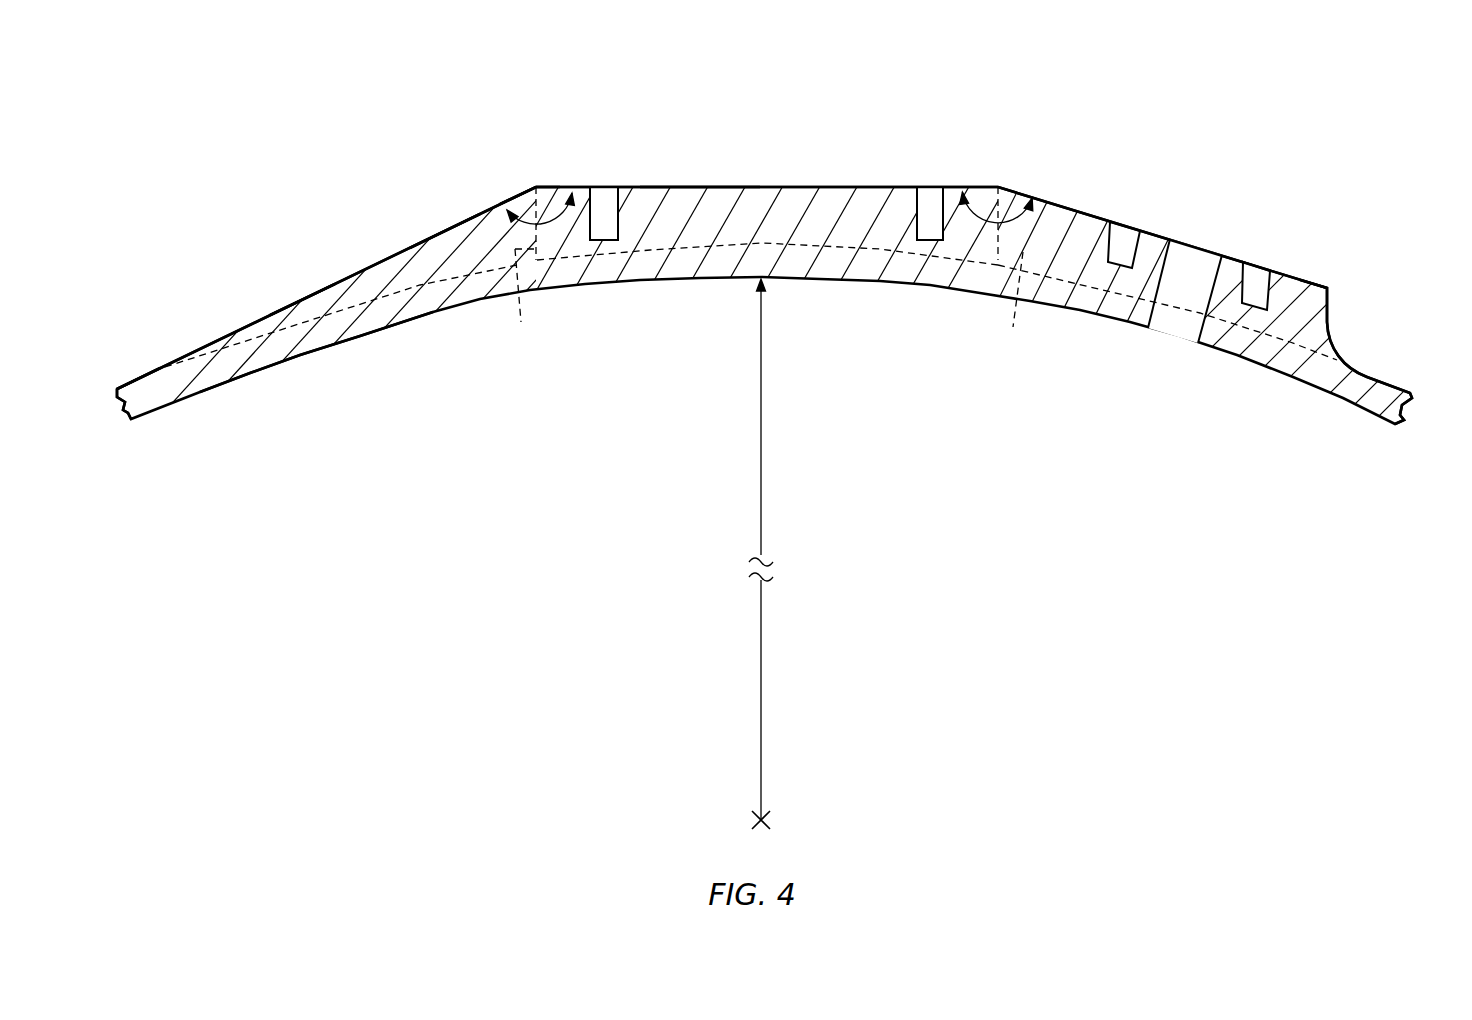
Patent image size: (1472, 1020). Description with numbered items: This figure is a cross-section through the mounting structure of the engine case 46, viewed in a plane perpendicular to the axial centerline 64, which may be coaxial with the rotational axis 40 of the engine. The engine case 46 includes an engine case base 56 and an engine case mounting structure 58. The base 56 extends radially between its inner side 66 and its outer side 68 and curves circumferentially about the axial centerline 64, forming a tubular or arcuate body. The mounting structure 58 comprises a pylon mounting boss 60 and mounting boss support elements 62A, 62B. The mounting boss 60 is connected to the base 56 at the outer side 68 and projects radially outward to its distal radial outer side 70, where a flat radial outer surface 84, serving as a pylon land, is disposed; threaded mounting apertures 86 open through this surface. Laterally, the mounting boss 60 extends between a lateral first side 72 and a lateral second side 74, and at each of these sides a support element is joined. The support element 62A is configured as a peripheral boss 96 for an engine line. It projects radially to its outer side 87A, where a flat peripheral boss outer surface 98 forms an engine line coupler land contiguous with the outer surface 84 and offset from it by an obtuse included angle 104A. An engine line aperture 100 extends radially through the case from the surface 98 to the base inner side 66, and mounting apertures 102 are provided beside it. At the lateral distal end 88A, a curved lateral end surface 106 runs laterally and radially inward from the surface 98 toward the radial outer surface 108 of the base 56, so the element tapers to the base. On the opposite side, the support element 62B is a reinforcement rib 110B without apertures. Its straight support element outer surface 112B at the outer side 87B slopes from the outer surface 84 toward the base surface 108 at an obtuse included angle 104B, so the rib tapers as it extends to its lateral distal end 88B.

The rotational axis 40 is at (827, 554).
The engine case 46 is at (207, 114).
The engine case base 56 is at (291, 370).
The engine case mounting structure 58 is at (540, 150).
The pylon mounting boss 60 is at (802, 182).
The mounting boss support element 62A is at (1167, 236).
The mounting boss support element 62B is at (326, 268).
The axial centerline 64 is at (768, 817).
The inner side 66 is at (143, 424).
The outer side 68 is at (134, 381).
The distal radial outer side 70 is at (700, 142).
The lateral first side 72 is at (1015, 304).
The lateral second side 74 is at (520, 303).
The radial outer surface 84 is at (695, 186).
The mounting apertures 86 is at (603, 186).
The distal radial outer side 87A is at (1368, 273).
The distal radial outer side 87B is at (447, 228).
The lateral distal end 88A is at (1365, 372).
The lateral distal end 88B is at (178, 358).
The peripheral boss 96 is at (1090, 210).
The peripheral boss outer surface 98 is at (1327, 288).
The engine line aperture 100 is at (1203, 268).
The mounting apertures 102 is at (1125, 238).
The included angle 104A is at (991, 225).
The included angle 104B is at (545, 224).
The lateral end surface 106 is at (1331, 330).
The radial outer surface 108 is at (1410, 393).
The reinforcement rib 110B is at (365, 264).
The support element outer surface 112B is at (302, 300).